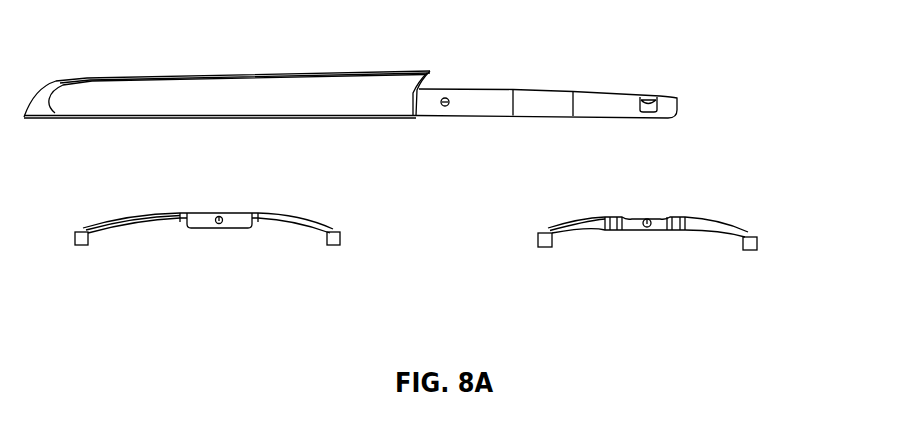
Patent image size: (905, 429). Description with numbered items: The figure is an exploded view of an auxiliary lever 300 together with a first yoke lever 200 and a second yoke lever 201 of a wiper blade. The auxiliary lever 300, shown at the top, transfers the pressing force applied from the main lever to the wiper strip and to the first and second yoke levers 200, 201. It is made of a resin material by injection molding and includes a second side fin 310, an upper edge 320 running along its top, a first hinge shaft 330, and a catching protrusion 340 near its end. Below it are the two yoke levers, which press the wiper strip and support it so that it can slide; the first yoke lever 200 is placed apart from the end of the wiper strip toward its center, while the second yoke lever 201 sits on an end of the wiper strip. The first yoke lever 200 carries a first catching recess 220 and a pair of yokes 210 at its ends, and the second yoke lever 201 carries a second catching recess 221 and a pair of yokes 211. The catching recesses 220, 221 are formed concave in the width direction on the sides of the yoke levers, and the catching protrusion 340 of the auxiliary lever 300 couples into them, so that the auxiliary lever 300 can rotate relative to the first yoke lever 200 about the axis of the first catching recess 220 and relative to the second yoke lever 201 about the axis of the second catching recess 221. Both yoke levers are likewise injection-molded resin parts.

The auxiliary lever 300 is at (350, 78).
The second side fin 310 is at (248, 83).
The upper edge 320 is at (133, 76).
The first hinge shaft 330 is at (446, 106).
The catching protrusion 340 is at (649, 113).
The first yoke lever 200 is at (656, 236).
The second yoke lever 201 is at (223, 232).
The yokes 210 is at (545, 248).
The yokes 211 is at (82, 246).
The first catching recess 220 is at (647, 218).
The second catching recess 221 is at (219, 216).